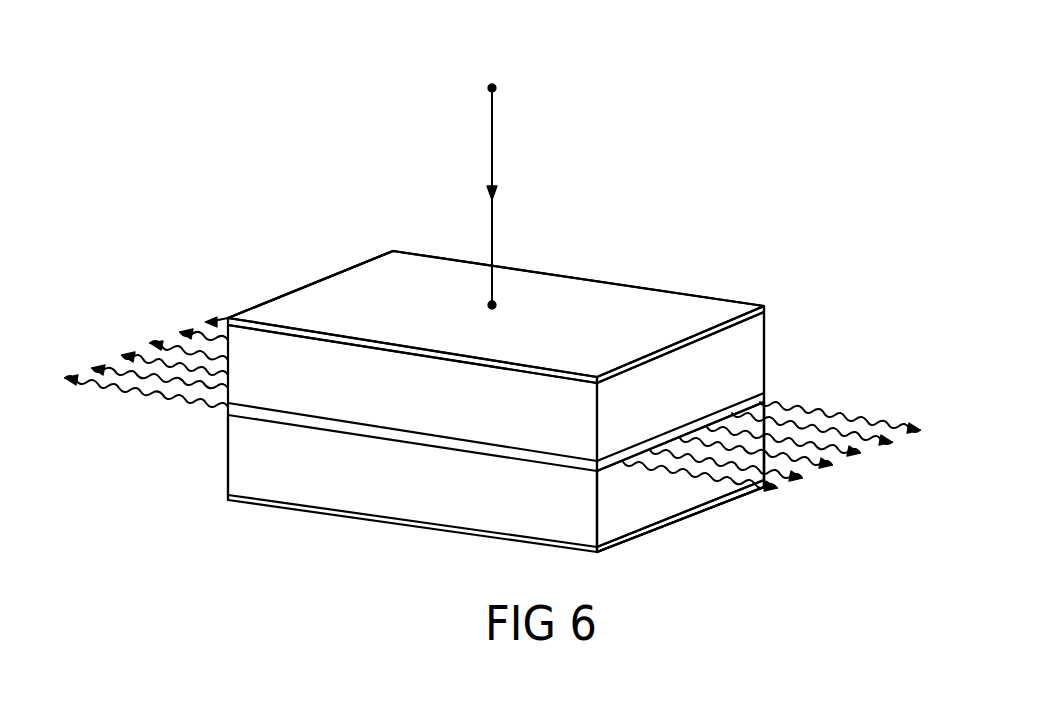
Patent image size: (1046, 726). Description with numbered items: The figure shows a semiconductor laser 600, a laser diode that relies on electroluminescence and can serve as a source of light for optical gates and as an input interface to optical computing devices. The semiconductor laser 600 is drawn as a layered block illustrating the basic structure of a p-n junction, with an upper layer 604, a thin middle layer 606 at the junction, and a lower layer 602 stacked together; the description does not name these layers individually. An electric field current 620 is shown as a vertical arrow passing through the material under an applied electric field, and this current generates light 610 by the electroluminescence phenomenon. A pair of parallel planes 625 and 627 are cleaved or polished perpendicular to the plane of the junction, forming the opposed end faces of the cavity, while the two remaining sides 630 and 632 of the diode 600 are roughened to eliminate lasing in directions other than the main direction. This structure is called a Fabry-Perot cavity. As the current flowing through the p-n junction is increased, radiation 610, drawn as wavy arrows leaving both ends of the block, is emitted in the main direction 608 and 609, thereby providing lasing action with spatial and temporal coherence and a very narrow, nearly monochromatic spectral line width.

The semiconductor laser 600 is at (848, 223).
The bottom layer 602 is at (308, 492).
The top layer 604 is at (376, 270).
The middle layer 606 is at (532, 460).
The main direction 608 is at (723, 482).
The main direction 609 is at (88, 382).
The light 610 is at (873, 406).
The electric field current 620 is at (494, 150).
The parallel plane 625 is at (630, 520).
The parallel plane 627 is at (277, 296).
The remaining side 630 is at (569, 390).
The remaining side 632 is at (766, 347).